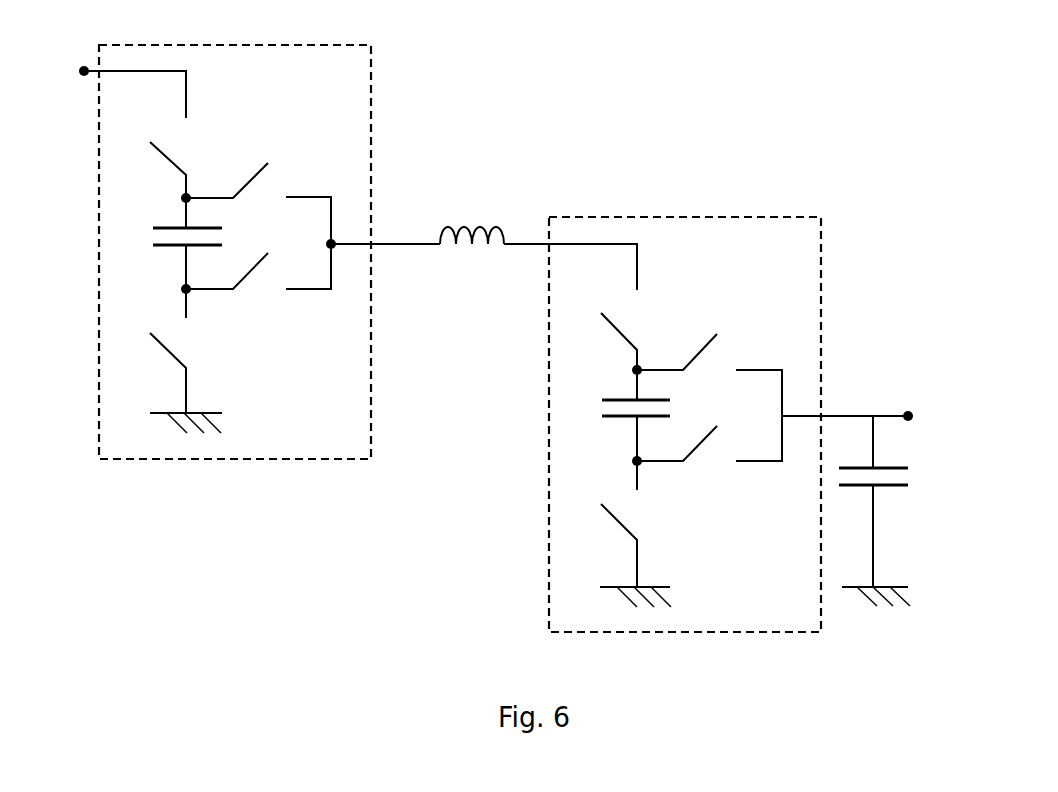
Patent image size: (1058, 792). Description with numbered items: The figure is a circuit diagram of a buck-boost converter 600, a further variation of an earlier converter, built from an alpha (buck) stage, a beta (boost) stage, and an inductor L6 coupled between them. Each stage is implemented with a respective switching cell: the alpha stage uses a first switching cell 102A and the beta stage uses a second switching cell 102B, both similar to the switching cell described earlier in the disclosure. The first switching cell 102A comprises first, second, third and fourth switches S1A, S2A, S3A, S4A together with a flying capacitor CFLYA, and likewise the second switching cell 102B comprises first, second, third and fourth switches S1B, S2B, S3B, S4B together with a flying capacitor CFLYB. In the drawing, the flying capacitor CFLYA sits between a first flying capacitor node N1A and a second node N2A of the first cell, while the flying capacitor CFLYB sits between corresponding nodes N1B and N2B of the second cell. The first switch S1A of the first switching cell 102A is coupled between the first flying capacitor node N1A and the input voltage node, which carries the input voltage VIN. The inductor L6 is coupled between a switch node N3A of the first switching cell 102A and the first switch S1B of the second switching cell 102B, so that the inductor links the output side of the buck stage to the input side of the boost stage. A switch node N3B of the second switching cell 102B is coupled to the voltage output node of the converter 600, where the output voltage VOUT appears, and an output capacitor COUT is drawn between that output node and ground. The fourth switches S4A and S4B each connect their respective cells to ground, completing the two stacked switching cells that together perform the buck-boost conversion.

The buck-boost converter 600 is at (760, 144).
The first switching cell 102A is at (360, 80).
The second switching cell 102B is at (815, 254).
The inductor L6 is at (484, 243).
The first switch S1A is at (196, 170).
The second switch S2A is at (258, 226).
The third switch S3A is at (234, 285).
The fourth switch S4A is at (210, 386).
The first switch S1B is at (646, 341).
The second switch S2B is at (709, 397).
The third switch S3B is at (685, 458).
The fourth switch S4B is at (660, 558).
The flying capacitor CFLYA is at (163, 258).
The flying capacitor CFLYB is at (612, 430).
The output capacitor COUT is at (899, 514).
The first flying capacitor node N1A is at (160, 200).
The node N2A is at (163, 293).
The switch node N3A is at (307, 236).
The node N1B is at (612, 372).
The node N2B is at (613, 466).
The switch node N3B is at (778, 408).
The input terminal VIN is at (114, 73).
The output terminal VOUT is at (891, 415).